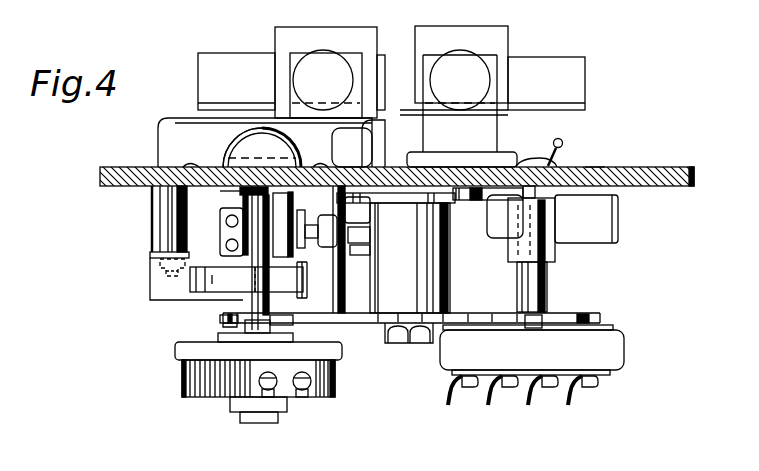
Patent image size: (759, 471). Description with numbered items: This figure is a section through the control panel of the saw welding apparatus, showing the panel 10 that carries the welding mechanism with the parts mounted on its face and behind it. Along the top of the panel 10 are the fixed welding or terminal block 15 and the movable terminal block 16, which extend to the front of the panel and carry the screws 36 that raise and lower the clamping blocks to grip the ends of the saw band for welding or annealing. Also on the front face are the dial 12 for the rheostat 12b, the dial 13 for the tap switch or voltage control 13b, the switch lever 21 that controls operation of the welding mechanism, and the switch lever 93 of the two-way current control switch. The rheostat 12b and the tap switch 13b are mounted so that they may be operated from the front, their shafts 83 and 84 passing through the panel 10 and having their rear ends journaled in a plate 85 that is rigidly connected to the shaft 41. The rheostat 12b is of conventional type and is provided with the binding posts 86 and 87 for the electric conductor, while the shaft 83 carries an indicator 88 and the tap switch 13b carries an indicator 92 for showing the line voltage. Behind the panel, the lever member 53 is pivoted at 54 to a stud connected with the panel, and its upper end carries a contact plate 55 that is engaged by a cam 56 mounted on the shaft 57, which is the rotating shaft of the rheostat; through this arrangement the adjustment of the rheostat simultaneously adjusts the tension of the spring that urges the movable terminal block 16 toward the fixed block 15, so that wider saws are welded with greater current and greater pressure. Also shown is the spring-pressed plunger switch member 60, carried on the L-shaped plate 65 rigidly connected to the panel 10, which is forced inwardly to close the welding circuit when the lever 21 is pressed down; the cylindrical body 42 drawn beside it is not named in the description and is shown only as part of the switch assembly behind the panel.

The panel 10 is at (678, 188).
The dial 12 is at (252, 140).
The rheostat 12b is at (176, 356).
The dial 13 is at (588, 166).
The tap switch or voltage control 13b is at (690, 347).
The fixed welding or terminal block 15 is at (237, 68).
The movable terminal block 16 is at (553, 67).
The switch lever 21 is at (172, 118).
The screws 36 is at (447, 60).
The shaft 41 is at (418, 343).
The solenoid 42 is at (448, 248).
The lever member 53 is at (150, 253).
The pivot 54 is at (162, 229).
The contact plate 55 is at (298, 293).
The cam 56 is at (300, 280).
The shaft 57 is at (222, 234).
The spring-pressed plunger switch member 60 is at (327, 244).
The L-shaped plate 65 is at (295, 200).
The shaft 83 is at (243, 303).
The shaft 84 is at (542, 318).
The plate 85 is at (368, 323).
The binding post 86 is at (258, 387).
The binding post 87 is at (309, 398).
The indicator 88 is at (233, 137).
The indicator 92 is at (533, 163).
The switch lever 93 is at (565, 143).